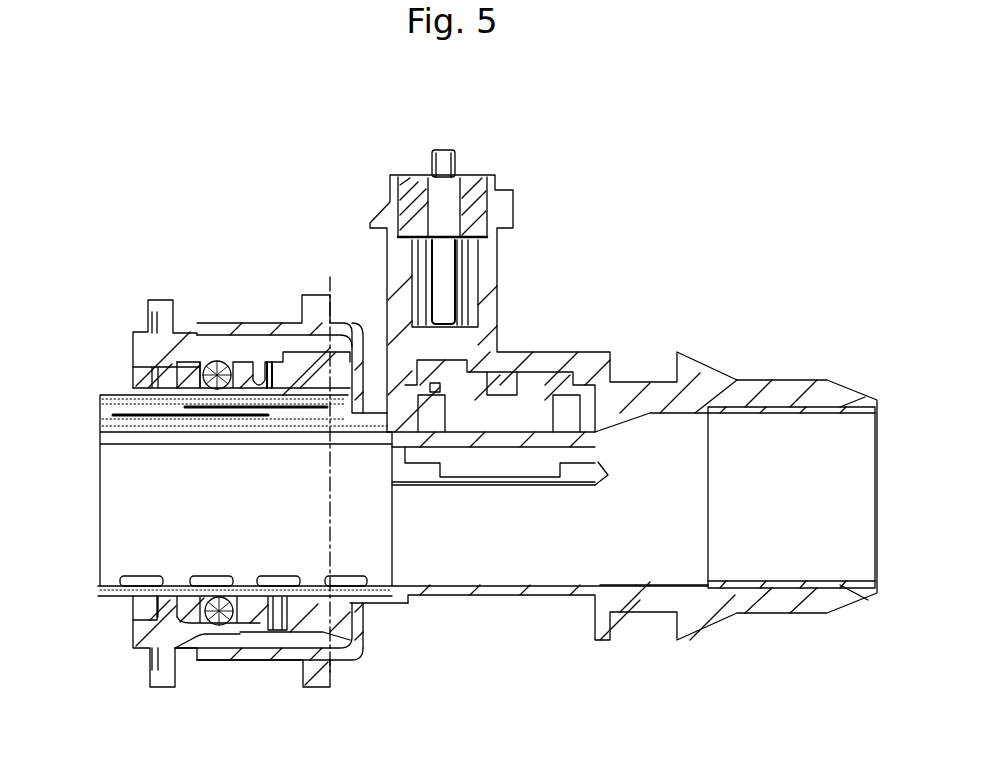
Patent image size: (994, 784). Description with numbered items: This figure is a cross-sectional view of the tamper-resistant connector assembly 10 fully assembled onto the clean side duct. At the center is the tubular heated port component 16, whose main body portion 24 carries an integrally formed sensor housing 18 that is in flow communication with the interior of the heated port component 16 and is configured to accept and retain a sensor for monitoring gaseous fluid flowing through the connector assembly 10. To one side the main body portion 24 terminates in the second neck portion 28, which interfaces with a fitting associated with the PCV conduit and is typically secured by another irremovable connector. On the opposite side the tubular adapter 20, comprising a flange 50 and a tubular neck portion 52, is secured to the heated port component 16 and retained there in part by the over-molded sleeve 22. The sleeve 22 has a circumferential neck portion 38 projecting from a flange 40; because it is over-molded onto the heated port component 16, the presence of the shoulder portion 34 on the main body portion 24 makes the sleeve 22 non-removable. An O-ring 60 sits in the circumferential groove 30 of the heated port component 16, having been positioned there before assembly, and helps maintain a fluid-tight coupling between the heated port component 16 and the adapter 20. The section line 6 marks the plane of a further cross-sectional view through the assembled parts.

The section line 6- 6 is at (330, 277).
The connector assembly 10 is at (166, 181).
The heated port component 16 is at (598, 302).
The sensor housing 18 is at (489, 276).
The adapter 20 is at (109, 328).
The sleeve 22 is at (290, 312).
The main body portion 24 is at (520, 590).
The second neck portion 28 is at (782, 603).
The circumferential groove 30 is at (205, 634).
The shoulder portion 34 is at (297, 368).
The circumferential neck portion 38 is at (231, 627).
The flange 40 is at (315, 684).
The flange 50 is at (147, 679).
The tubular neck portion 52 is at (203, 636).
The O-ring 60 is at (203, 362).